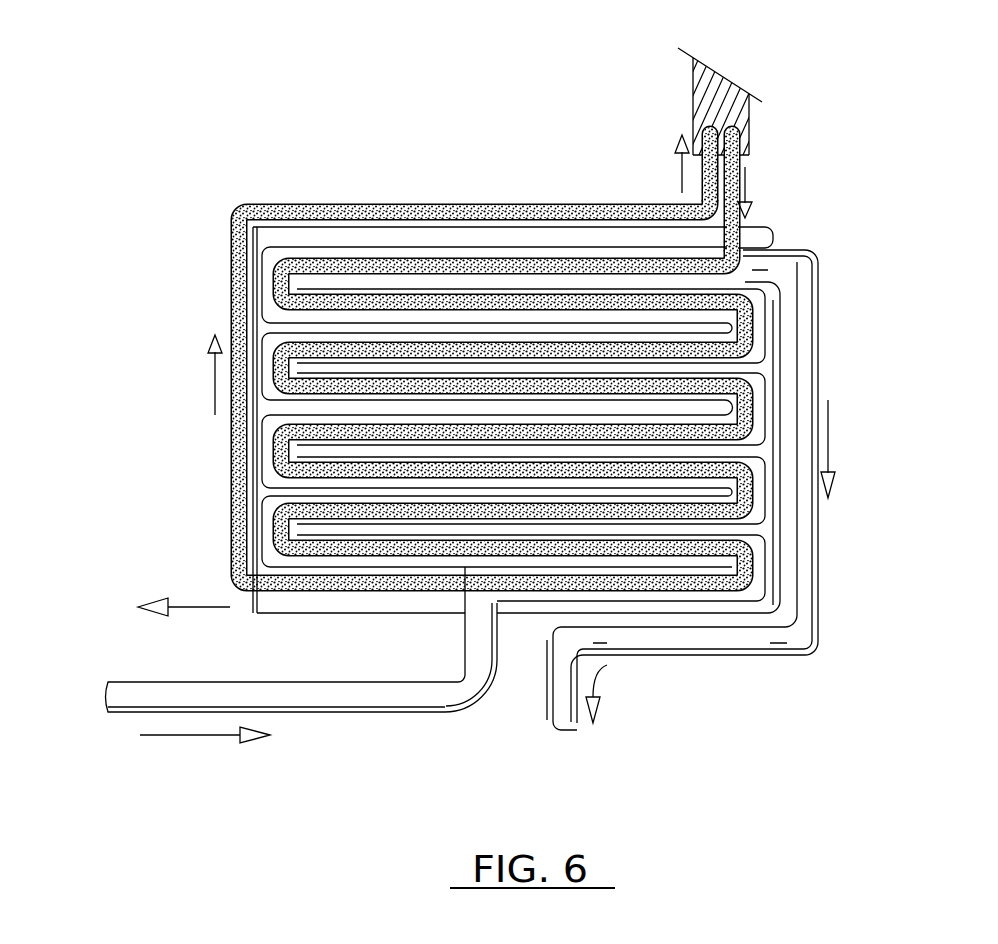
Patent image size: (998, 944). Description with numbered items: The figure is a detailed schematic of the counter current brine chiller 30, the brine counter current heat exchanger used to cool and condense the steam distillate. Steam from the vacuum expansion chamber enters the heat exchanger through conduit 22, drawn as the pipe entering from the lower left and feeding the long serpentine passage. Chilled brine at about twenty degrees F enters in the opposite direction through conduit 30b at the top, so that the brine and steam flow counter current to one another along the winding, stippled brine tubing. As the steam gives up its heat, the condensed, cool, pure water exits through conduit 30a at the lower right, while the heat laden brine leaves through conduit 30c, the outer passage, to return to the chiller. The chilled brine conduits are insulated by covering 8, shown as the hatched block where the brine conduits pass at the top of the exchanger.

The covering 8 is at (748, 120).
The conduit 22 is at (178, 682).
The counter current brine chiller 30 is at (773, 237).
The conduit 30a is at (818, 515).
The conduit 30b is at (739, 160).
The conduit 30c is at (508, 203).